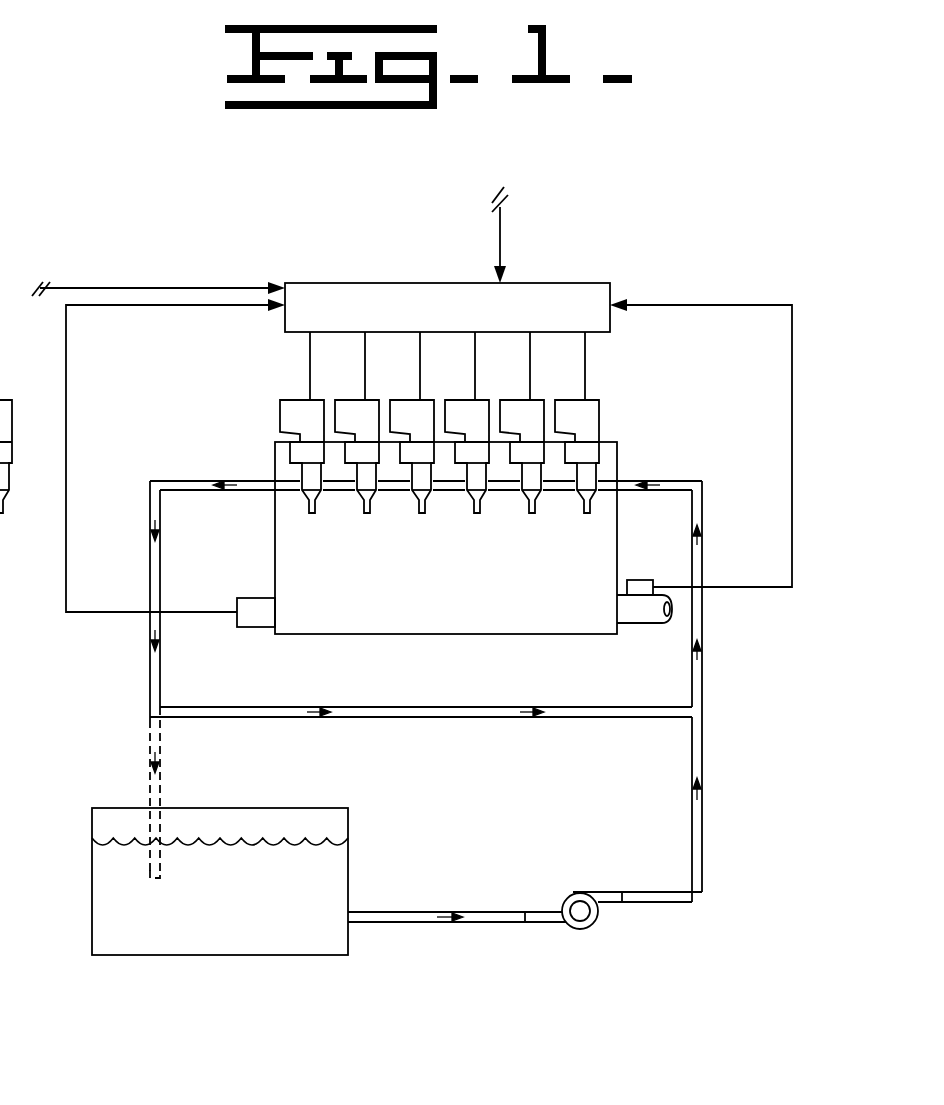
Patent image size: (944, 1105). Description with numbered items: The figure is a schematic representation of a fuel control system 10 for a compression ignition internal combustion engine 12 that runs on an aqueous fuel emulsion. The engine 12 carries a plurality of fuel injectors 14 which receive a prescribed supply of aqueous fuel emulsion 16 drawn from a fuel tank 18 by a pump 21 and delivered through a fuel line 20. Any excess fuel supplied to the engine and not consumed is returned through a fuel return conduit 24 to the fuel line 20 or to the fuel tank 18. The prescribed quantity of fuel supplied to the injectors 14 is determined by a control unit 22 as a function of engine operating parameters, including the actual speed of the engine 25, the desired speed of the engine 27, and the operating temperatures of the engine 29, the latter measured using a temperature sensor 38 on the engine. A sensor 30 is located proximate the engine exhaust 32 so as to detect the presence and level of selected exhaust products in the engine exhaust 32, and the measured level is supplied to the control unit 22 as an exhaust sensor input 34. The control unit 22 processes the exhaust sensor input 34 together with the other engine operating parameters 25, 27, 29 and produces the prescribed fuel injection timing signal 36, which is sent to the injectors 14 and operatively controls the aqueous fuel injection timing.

The fuel control system 10 is at (170, 174).
The compression ignition engine 12 is at (473, 635).
The fuel injectors 14 is at (280, 428).
The aqueous fuel emulsion 16 is at (233, 916).
The fuel tank 18 is at (287, 807).
The fuel line 20 is at (685, 480).
The pump 21 is at (587, 928).
The control unit 22 is at (367, 284).
The fuel return conduit 24 is at (150, 688).
The actual speed of the engine 25 is at (177, 287).
The desired speed of the engine 27 is at (502, 252).
The operating temperatures of the engine 29 is at (214, 305).
The sensor 30 is at (632, 580).
The engine exhaust 32 is at (632, 625).
The exhaust sensor input 34 is at (793, 507).
The fuel injection timing signal 36 is at (420, 373).
The temperature sensor 38 is at (247, 627).